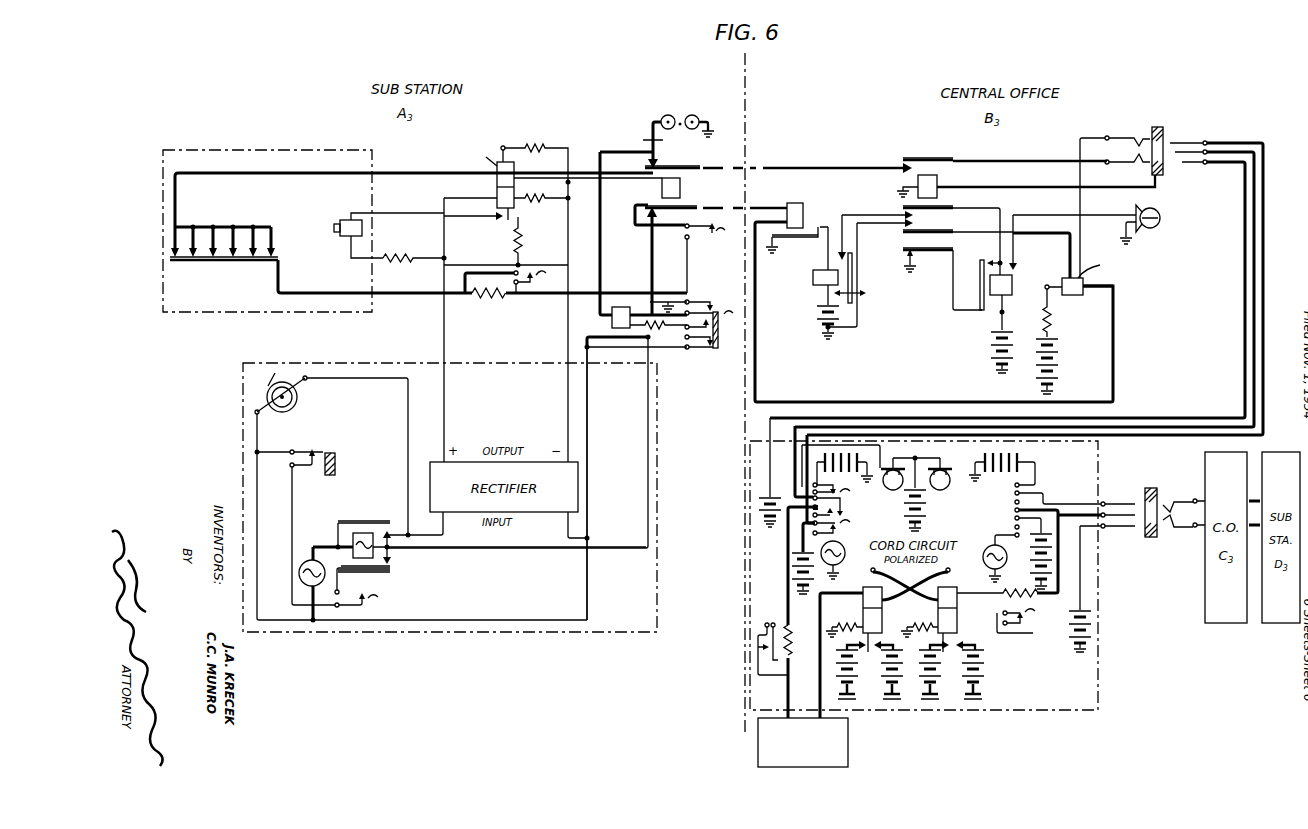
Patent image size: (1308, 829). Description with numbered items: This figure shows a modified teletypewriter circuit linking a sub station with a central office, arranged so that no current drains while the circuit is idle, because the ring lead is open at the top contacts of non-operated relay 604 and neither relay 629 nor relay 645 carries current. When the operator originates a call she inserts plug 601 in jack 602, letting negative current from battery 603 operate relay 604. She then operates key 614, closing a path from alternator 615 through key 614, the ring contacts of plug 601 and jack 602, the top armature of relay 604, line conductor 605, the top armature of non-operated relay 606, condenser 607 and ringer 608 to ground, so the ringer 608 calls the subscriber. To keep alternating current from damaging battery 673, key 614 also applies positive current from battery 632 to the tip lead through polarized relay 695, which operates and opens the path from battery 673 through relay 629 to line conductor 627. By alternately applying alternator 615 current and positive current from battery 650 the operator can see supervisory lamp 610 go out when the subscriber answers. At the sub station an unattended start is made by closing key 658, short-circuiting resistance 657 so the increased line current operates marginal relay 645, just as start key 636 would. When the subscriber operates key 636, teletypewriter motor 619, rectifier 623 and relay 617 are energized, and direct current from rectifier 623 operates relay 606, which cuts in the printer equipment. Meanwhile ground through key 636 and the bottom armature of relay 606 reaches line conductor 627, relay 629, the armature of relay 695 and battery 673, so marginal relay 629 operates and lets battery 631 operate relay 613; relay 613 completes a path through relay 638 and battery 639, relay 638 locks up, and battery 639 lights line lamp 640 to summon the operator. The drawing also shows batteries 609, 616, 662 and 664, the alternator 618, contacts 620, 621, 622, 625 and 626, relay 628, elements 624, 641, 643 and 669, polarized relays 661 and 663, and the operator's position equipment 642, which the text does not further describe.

The plug 601 is at (1201, 141).
The jack 602 is at (1147, 133).
The battery 603 is at (762, 506).
The relay 604 is at (928, 175).
The line conductor 605 is at (758, 164).
The relay 606 is at (680, 188).
The condenser 607 is at (645, 141).
The ringer 608 is at (693, 114).
The battery 609 is at (927, 510).
The supervisory lamp 610 is at (896, 466).
The relay 613 is at (813, 280).
The key 614 is at (848, 520).
The alternator 615 is at (821, 550).
The battery 616 is at (792, 566).
The relay 617 is at (367, 533).
The generator 618 is at (305, 561).
The teletypewriter motor 619 is at (287, 381).
The contact 620 is at (327, 451).
The contact 621 is at (383, 599).
The key 622 is at (336, 467).
The rectifier 623 is at (560, 505).
The rectifier array 624 is at (244, 226).
The contact 625 is at (542, 278).
The contact 626 is at (716, 233).
The line conductor 627 is at (757, 207).
The polarized relay 628 is at (497, 185).
The marginal relay 629 is at (800, 213).
The battery 631 is at (817, 313).
The battery 632 is at (848, 480).
The start key 636 is at (725, 320).
The relay 638 is at (990, 283).
The battery 639 is at (991, 345).
The line lamp 640 is at (1162, 222).
The condenser 641 is at (345, 233).
The operator's position equipment 642 is at (848, 750).
The resistor 643 is at (576, 311).
The marginal relay 645 is at (621, 307).
The battery 650 is at (984, 678).
The resistance 657 is at (795, 660).
The key 658 is at (767, 623).
The polarized relay 661 is at (863, 604).
The battery 662 is at (880, 682).
The polarized relay 663 is at (957, 618).
The battery 664 is at (917, 676).
The resistor 669 is at (655, 330).
The battery 673 is at (1060, 361).
The polarized relay 695 is at (1073, 296).